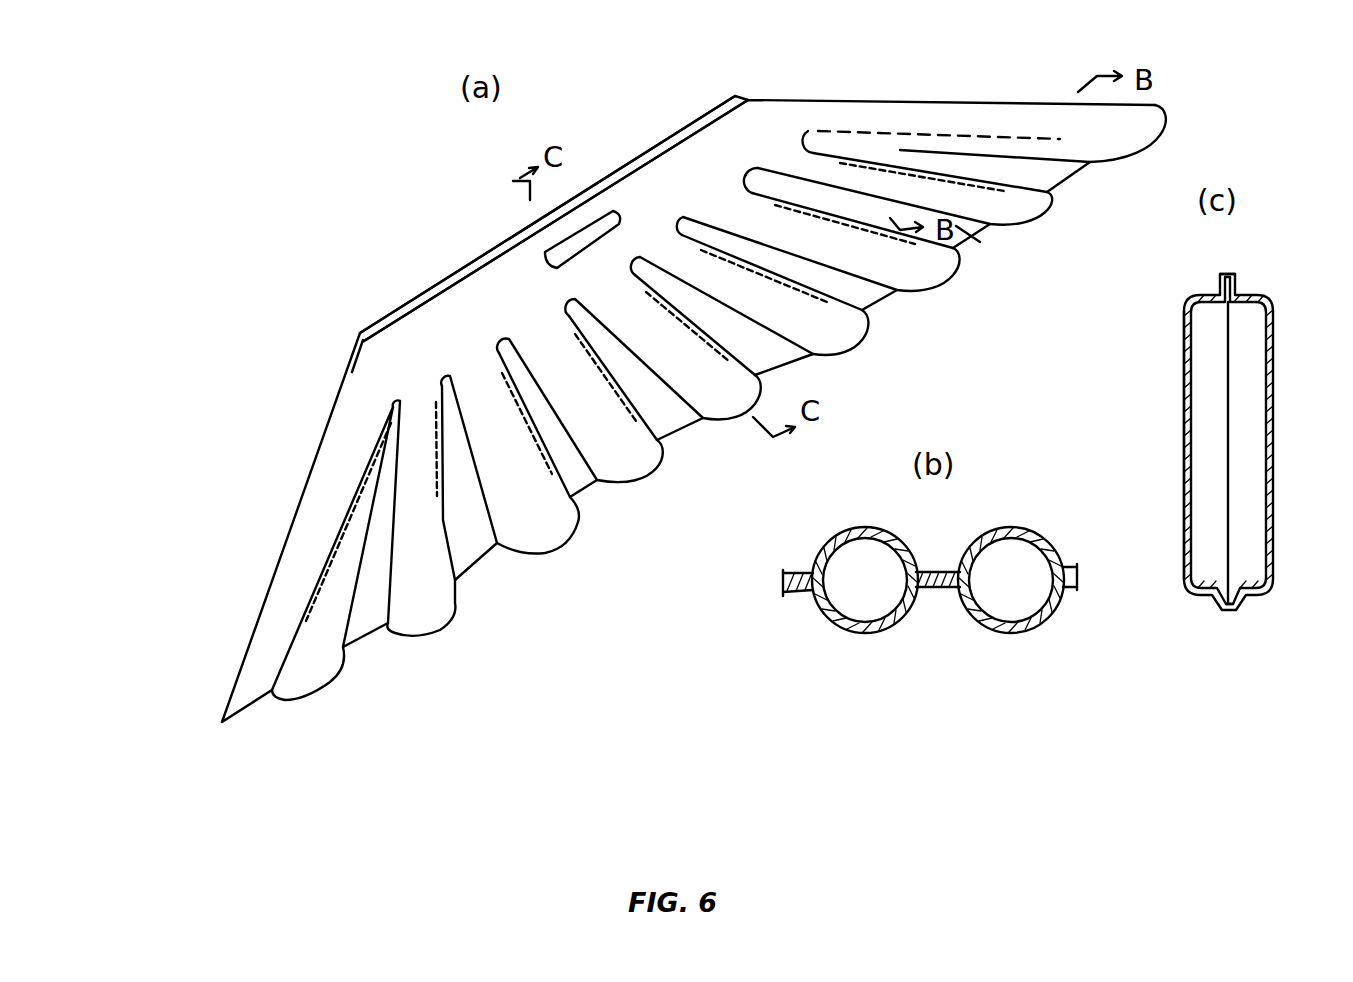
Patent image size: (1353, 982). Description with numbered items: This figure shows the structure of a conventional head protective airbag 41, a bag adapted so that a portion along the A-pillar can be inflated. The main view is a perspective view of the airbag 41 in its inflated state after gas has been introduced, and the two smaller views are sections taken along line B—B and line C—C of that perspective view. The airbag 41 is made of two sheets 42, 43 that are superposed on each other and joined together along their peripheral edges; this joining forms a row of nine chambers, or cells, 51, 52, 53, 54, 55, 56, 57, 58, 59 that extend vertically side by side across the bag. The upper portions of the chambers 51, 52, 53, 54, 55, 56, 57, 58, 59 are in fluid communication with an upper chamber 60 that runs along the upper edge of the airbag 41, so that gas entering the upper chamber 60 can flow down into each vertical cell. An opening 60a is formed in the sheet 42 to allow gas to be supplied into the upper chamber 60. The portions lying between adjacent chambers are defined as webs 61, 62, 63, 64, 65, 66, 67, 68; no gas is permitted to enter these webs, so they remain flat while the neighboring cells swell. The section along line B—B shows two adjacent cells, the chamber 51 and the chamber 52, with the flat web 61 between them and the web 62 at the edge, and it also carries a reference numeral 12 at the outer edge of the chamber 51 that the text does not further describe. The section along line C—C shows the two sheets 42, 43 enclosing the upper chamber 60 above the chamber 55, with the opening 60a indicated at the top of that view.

The flange 12 is at (1078, 572).
The airbag 41 is at (810, 78).
The sheet 42 is at (1274, 427).
The sheet 43 is at (1184, 432).
The chamber 51 is at (1001, 114).
The chamber 52 is at (1038, 220).
The chamber 53 is at (945, 285).
The chamber 54 is at (860, 345).
The chamber 55 is at (727, 400).
The chamber 56 is at (642, 467).
The chamber 57 is at (550, 548).
The chamber 58 is at (430, 618).
The chamber 59 is at (310, 687).
The upper chamber 60 is at (428, 310).
The opening 60a is at (592, 228).
The web 61 is at (1050, 170).
The web 62 is at (970, 236).
The web 63 is at (883, 298).
The web 64 is at (800, 358).
The web 65 is at (682, 430).
The web 66 is at (590, 484).
The web 67 is at (477, 560).
The web 68 is at (363, 625).